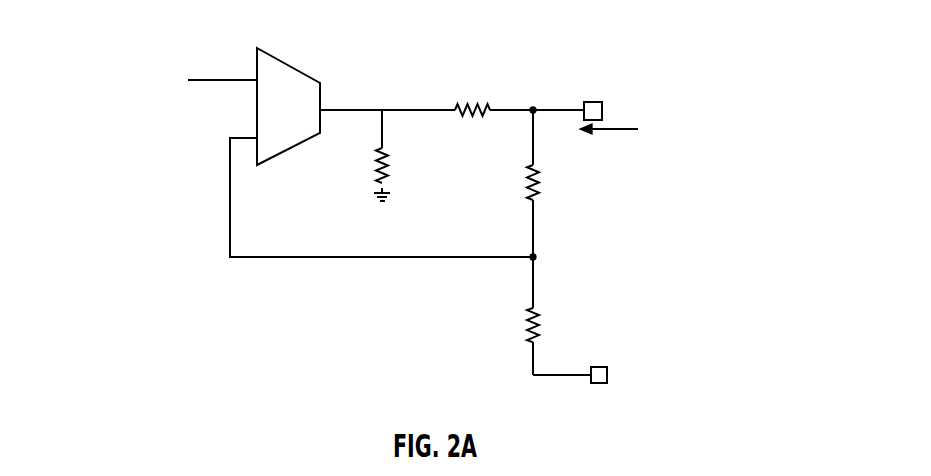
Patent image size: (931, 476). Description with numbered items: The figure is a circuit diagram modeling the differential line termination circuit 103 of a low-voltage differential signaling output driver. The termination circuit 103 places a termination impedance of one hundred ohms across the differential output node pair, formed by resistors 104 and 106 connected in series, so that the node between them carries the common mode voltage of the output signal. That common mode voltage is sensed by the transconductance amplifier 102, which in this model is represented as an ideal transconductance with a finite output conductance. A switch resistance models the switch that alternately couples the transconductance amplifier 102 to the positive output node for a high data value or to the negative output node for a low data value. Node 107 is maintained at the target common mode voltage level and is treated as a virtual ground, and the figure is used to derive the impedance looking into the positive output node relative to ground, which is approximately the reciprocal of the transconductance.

The termination circuit 103 is at (142, 24).
The transconductance amplifier 102 is at (256, 62).
The resistor 104 is at (531, 167).
The resistor 106 is at (530, 311).
The node 107 is at (534, 256).